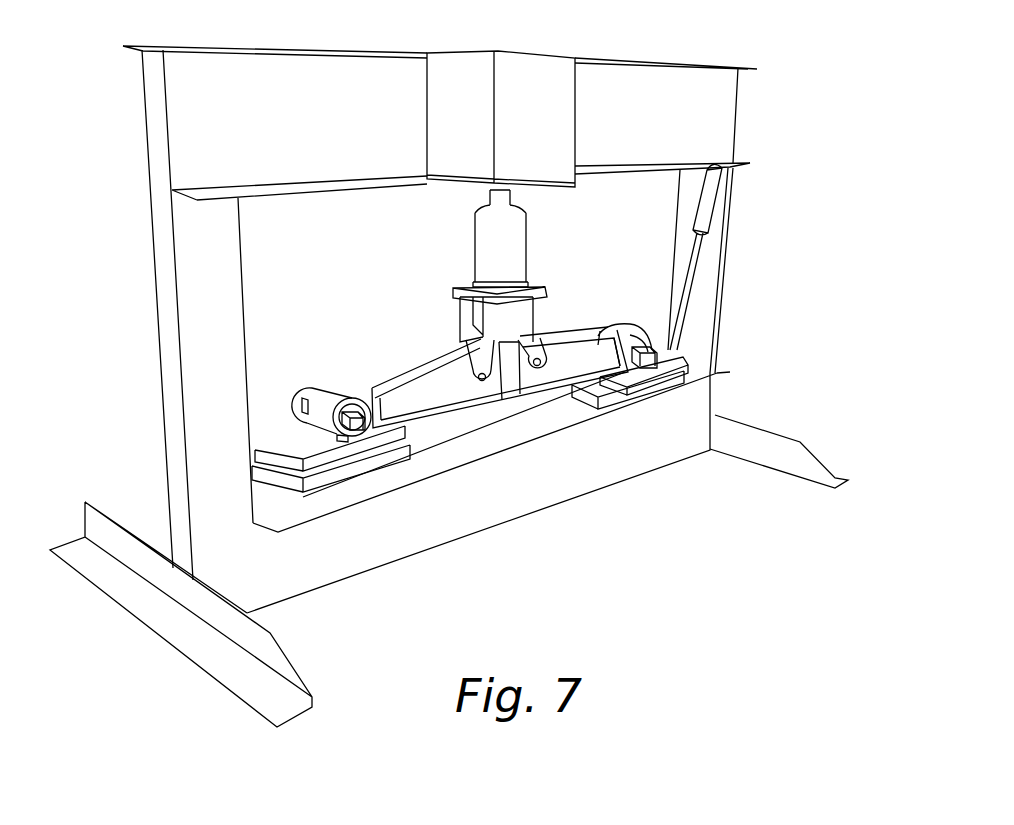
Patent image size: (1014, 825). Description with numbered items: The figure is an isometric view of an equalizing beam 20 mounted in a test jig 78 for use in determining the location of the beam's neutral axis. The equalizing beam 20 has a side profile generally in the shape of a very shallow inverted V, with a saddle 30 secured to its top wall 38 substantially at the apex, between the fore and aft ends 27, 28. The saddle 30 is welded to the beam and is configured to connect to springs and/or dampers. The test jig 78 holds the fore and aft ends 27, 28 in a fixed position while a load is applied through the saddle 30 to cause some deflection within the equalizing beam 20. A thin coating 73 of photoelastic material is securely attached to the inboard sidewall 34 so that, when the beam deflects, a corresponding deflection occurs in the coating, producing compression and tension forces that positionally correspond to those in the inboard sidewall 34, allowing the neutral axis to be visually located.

The equalizing beam 20 is at (637, 313).
The fore end 27 is at (365, 398).
The aft end 28 is at (632, 370).
The saddle 30 is at (515, 322).
The inboard sidewall 34 is at (366, 431).
The top wall 38 is at (488, 416).
The thin coating 73 is at (467, 400).
The test jig 78 is at (327, 533).